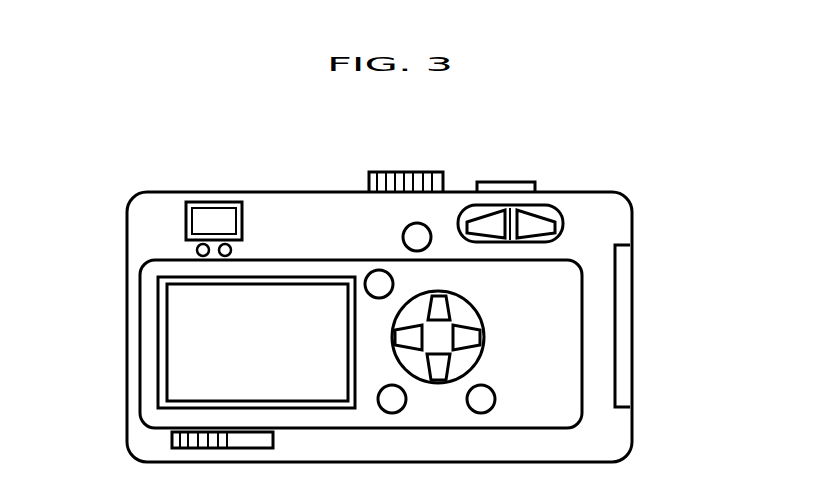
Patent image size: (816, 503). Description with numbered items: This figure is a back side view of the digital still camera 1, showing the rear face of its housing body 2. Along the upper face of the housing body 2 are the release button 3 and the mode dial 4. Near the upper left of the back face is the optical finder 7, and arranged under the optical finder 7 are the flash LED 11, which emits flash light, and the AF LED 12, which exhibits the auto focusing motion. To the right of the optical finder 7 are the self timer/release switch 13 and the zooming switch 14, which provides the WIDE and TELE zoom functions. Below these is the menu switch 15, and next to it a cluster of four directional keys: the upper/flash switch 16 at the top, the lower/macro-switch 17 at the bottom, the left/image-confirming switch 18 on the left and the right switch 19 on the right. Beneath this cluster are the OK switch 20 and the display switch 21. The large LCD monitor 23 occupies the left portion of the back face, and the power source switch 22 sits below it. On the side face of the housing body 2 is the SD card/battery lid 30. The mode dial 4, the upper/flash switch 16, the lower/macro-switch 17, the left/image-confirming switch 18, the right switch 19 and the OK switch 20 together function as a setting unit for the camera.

The digital still camera 1 is at (620, 174).
The housing body 2 is at (126, 372).
The release button 3 is at (506, 183).
The mode dial 4 is at (411, 172).
The optical finder 7 is at (214, 202).
The flash LED 11 is at (232, 250).
The AF LED 12 is at (196, 248).
The self timer/release switch 13 is at (406, 230).
The zooming switch 14 is at (566, 222).
The menu switch 15 is at (370, 272).
The upper/flash switch 16 is at (440, 306).
The lower/macro-switch 17 is at (444, 360).
The left/image-confirming switch 18 is at (397, 337).
The right switch 19 is at (482, 338).
The OK switch 20 is at (402, 408).
The display switch 21 is at (494, 399).
The power source switch 22 is at (252, 440).
The LCD monitor 23 is at (168, 318).
The SD card/battery lid 30 is at (622, 330).